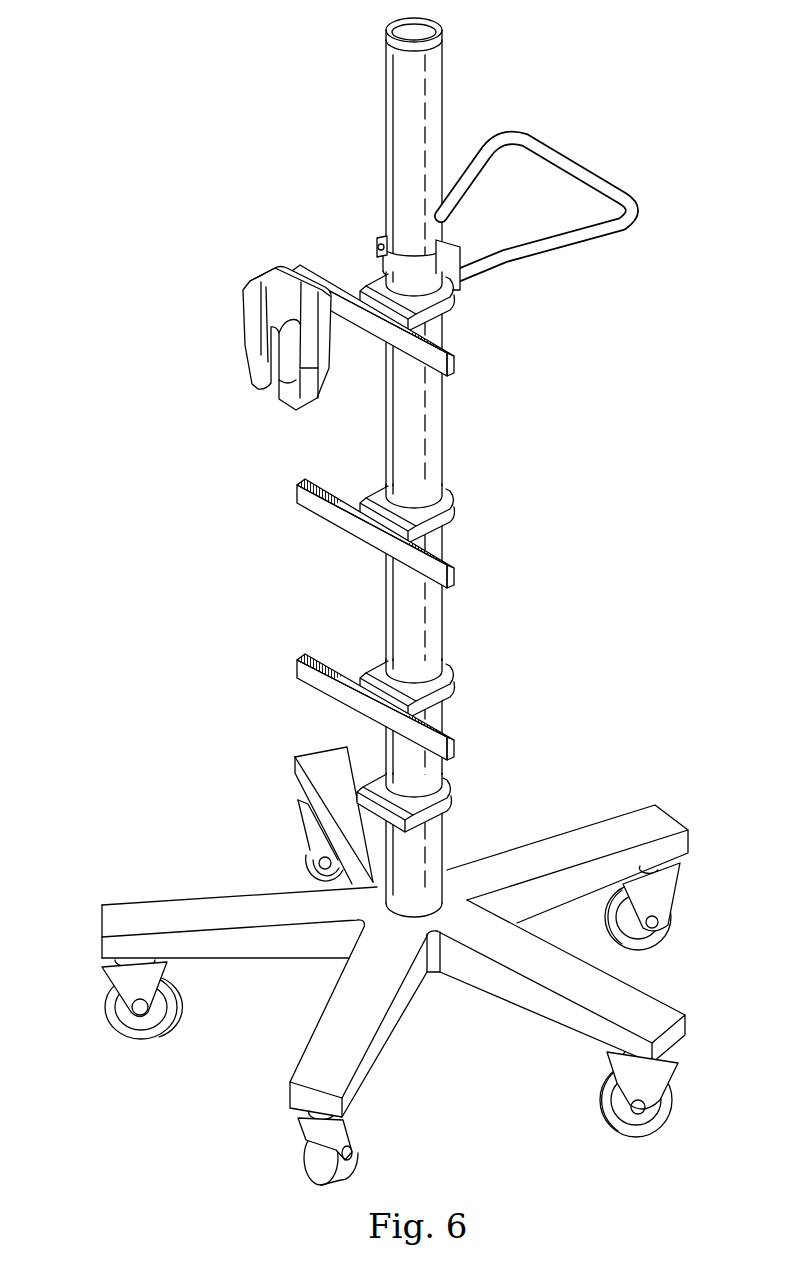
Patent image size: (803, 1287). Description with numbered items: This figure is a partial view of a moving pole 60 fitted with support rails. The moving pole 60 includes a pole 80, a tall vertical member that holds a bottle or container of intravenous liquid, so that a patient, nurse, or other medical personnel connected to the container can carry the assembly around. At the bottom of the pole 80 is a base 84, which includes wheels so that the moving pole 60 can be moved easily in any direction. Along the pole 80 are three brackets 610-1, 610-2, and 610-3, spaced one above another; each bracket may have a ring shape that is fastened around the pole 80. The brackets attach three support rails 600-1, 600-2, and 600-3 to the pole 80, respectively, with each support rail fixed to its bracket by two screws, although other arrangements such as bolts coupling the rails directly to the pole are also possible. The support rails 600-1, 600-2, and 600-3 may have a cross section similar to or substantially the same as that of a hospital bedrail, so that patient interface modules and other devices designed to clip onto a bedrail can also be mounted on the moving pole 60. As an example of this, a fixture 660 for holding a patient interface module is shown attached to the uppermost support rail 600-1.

The moving pole 60 is at (243, 58).
The pole 80 is at (386, 130).
The base 84 is at (208, 906).
The fixture 660 is at (243, 317).
The bracket 610-1 is at (450, 312).
The support rail 600-1 is at (457, 367).
The bracket 610-2 is at (448, 520).
The support rail 600-2 is at (338, 517).
The bracket 610-3 is at (448, 690).
The support rail 600-3 is at (332, 687).